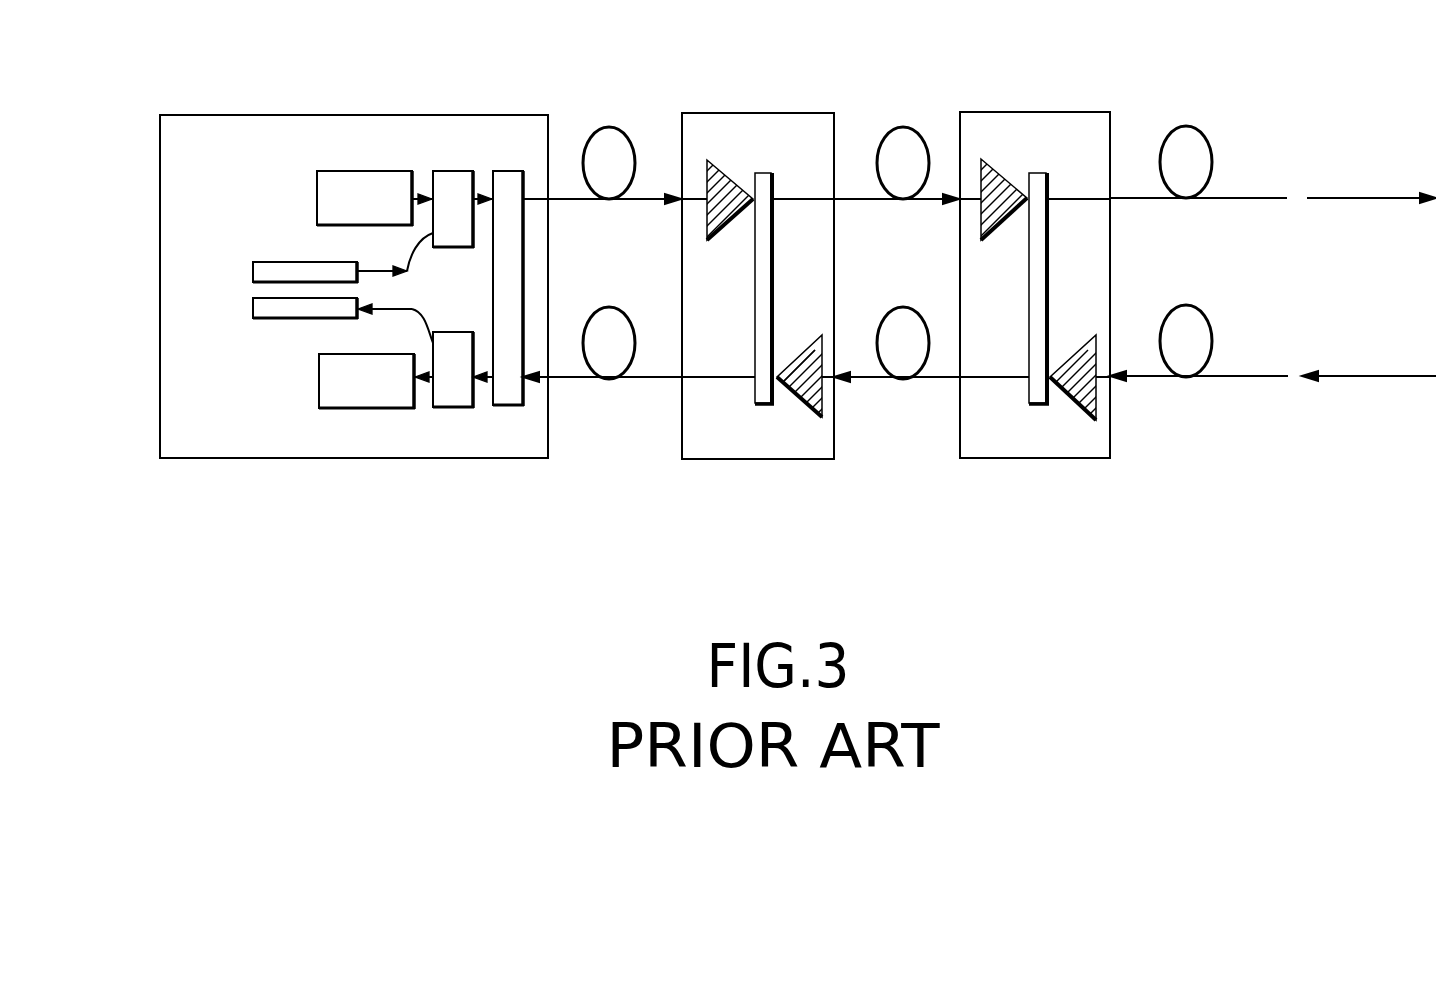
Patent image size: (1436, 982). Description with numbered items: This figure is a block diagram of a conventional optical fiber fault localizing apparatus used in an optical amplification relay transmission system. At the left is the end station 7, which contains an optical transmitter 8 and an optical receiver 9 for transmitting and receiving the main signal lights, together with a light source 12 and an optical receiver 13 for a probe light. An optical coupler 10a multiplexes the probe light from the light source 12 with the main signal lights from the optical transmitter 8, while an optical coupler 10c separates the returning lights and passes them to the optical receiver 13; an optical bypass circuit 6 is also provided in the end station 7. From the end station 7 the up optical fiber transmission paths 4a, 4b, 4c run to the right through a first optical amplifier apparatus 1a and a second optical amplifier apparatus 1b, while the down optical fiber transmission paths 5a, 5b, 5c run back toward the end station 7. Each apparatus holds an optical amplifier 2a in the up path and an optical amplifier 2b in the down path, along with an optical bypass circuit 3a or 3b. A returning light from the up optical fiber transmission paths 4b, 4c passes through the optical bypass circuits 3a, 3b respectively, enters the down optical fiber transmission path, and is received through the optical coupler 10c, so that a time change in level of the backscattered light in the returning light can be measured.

The optical amplifier apparatus 1a is at (714, 113).
The optical amplifier apparatus 1b is at (992, 112).
The optical amplifier 2a is at (733, 173).
The optical amplifier 2b is at (804, 408).
The optical bypass circuit 3a is at (758, 405).
The optical bypass circuit 3b is at (1030, 405).
The up optical fiber transmission path 4a is at (611, 127).
The up optical fiber transmission path 4b is at (906, 127).
The up optical fiber transmission path 4c is at (1186, 126).
The down optical fiber transmission path 5a is at (609, 379).
The down optical fiber transmission path 5b is at (904, 379).
The down optical fiber transmission path 5c is at (1186, 377).
The optical bypass circuit 6 is at (509, 406).
The end station 7 is at (293, 460).
The optical transmitter 8 is at (364, 170).
The optical receiver 9 is at (362, 408).
The optical coupler 10a is at (447, 171).
The optical coupler 10c is at (451, 408).
The light source 12 is at (278, 261).
The optical receiver 13 is at (269, 319).